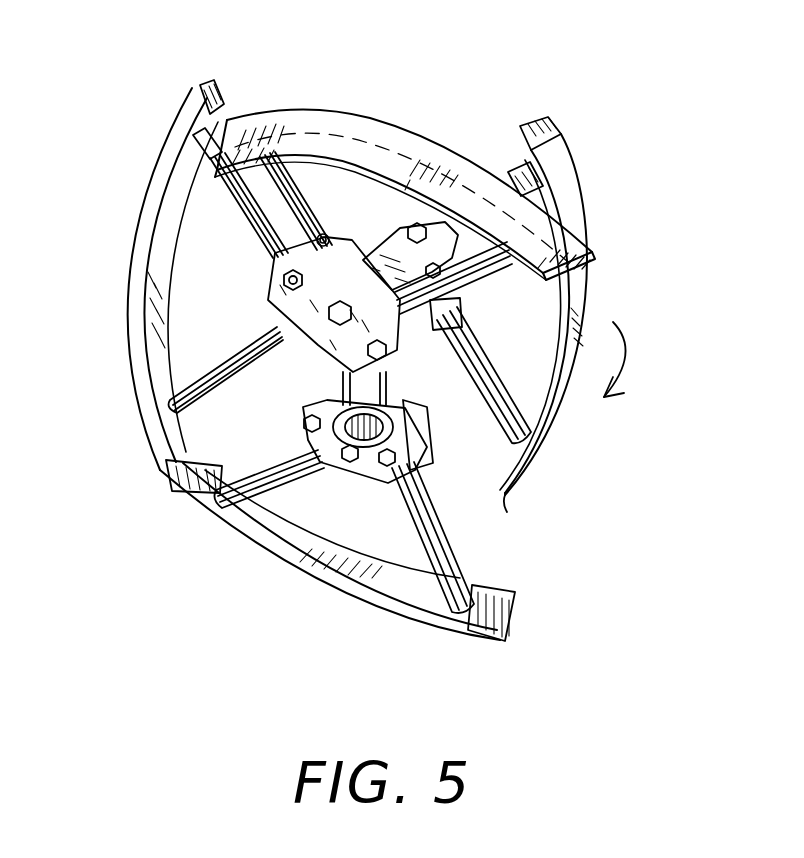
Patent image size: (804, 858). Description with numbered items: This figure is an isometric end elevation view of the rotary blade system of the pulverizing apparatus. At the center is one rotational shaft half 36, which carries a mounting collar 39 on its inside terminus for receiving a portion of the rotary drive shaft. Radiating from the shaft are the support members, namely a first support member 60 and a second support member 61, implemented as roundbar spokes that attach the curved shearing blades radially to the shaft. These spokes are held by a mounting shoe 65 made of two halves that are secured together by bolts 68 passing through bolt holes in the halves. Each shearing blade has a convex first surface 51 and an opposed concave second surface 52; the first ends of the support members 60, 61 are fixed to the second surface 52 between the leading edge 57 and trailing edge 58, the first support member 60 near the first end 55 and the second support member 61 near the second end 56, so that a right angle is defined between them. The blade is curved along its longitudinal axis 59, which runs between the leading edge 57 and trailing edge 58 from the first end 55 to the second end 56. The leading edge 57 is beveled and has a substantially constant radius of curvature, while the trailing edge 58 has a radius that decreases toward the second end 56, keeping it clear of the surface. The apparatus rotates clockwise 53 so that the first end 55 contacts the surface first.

The rotational shaft half 36 is at (328, 244).
The mounting collar 39 is at (342, 394).
The first surface 51 is at (302, 119).
The second surface 52 is at (153, 278).
The clockwise direction 53 is at (643, 359).
The first end 55 is at (222, 98).
The second end 56 is at (537, 120).
The leading edge 57 is at (135, 243).
The trailing edge 58 is at (348, 252).
The longitudinal axis 59 is at (555, 222).
The first support member 60 is at (254, 203).
The second support member 61 is at (517, 170).
The mounting shoe 65 is at (432, 455).
The bolt 68 is at (270, 305).